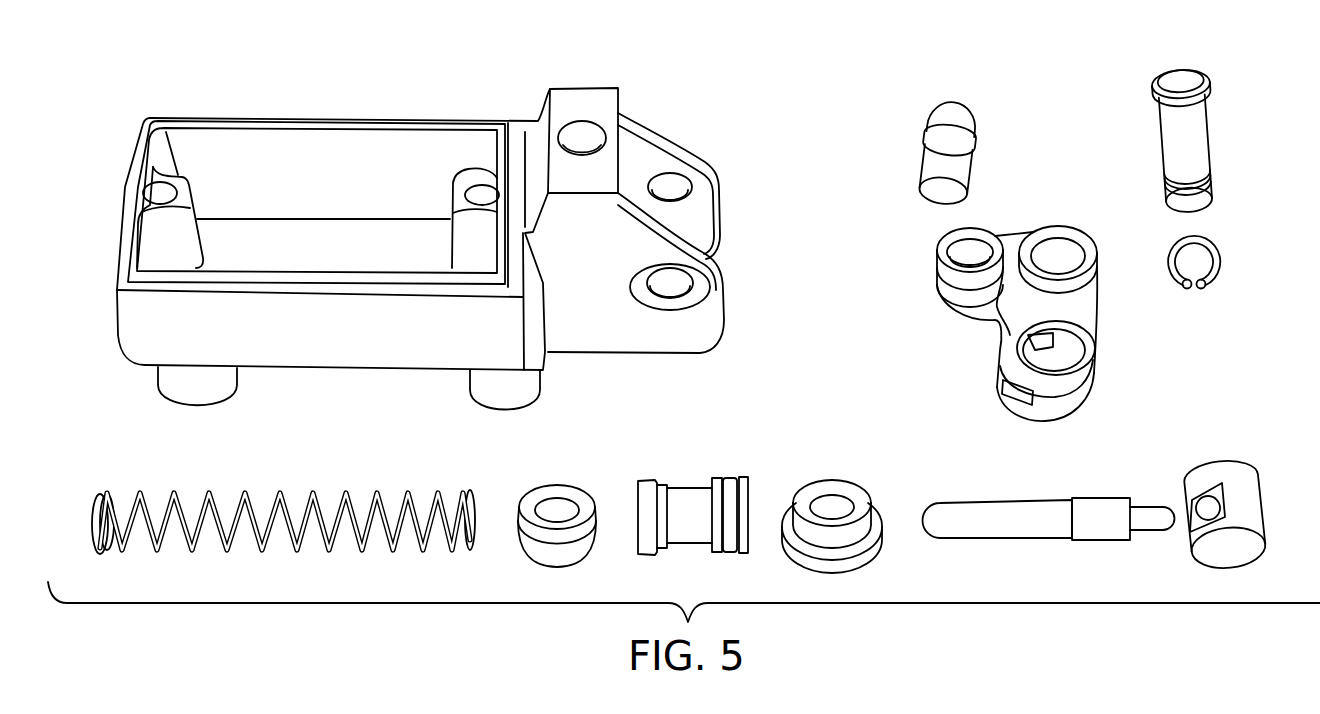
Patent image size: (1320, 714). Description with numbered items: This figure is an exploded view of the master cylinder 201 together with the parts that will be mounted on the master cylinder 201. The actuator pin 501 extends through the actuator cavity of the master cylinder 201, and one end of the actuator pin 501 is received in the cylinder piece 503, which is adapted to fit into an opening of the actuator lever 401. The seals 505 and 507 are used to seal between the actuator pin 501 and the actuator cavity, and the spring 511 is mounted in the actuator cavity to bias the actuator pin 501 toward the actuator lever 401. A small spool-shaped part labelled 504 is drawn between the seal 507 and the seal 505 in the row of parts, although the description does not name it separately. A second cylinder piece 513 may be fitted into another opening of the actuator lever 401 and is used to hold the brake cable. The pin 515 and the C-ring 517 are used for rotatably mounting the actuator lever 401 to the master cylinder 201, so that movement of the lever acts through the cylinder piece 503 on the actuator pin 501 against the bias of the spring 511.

The master cylinder 201 is at (210, 139).
The cylinder piece 513 is at (948, 113).
The pin 515 is at (1172, 95).
The C-ring 517 is at (1221, 264).
The actuator lever 401 is at (1085, 385).
The spring 511 is at (280, 502).
The seal 507 is at (553, 490).
The piston 504 is at (688, 502).
The seal 505 is at (838, 485).
The actuator pin 501 is at (1052, 515).
The cylinder piece 503 is at (1238, 473).